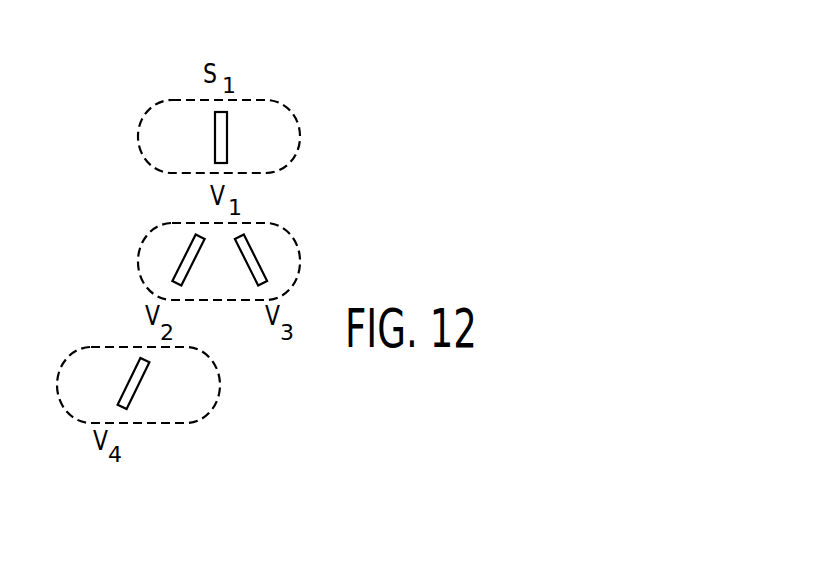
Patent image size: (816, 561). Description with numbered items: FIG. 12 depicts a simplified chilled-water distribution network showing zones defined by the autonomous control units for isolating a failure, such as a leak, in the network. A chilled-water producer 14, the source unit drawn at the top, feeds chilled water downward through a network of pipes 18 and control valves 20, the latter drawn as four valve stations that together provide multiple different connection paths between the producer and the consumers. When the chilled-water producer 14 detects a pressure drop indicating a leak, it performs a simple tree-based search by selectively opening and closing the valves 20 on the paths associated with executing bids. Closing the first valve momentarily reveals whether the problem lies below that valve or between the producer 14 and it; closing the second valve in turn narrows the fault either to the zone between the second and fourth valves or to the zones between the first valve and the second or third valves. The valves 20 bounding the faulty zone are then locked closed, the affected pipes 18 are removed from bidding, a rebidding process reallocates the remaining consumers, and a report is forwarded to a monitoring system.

The chilled-water producer 14 is at (166, 73).
The pipes 18 is at (227, 134).
The control valves 20 is at (250, 202).